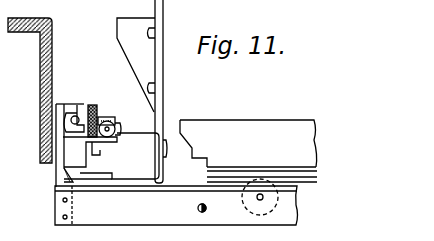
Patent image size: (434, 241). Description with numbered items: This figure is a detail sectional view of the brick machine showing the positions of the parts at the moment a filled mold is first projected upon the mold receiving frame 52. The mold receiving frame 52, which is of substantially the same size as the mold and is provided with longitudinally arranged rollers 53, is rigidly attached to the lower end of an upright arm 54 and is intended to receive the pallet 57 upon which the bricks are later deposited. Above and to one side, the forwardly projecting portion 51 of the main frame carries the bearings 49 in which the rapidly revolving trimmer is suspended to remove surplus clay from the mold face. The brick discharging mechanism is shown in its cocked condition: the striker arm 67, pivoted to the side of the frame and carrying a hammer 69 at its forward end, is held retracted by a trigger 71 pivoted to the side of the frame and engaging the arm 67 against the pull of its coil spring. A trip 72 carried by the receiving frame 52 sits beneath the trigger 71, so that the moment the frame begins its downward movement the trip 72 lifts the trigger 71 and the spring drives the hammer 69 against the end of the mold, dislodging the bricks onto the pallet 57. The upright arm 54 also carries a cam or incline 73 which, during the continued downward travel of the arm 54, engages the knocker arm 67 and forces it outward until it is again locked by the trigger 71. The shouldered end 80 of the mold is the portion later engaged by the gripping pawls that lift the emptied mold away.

The bearings 49 is at (88, 4).
The forwardly projecting portions of the main frame 51 is at (43, 71).
The mold receiving frame 52 is at (176, 205).
The rollers 53 is at (262, 186).
The upright arms 54 is at (161, 25).
The pallet 57 is at (296, 162).
The striker arms 67 is at (95, 107).
The hammers 69 is at (111, 156).
The trigger 71 is at (104, 116).
The trip 72 is at (62, 162).
The cams or inclines 73 is at (125, 28).
The shouldered ends of the molds 80 is at (196, 153).